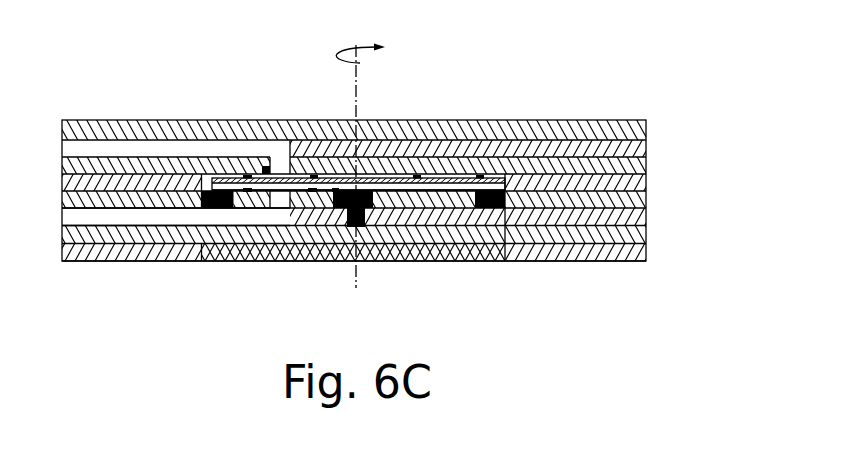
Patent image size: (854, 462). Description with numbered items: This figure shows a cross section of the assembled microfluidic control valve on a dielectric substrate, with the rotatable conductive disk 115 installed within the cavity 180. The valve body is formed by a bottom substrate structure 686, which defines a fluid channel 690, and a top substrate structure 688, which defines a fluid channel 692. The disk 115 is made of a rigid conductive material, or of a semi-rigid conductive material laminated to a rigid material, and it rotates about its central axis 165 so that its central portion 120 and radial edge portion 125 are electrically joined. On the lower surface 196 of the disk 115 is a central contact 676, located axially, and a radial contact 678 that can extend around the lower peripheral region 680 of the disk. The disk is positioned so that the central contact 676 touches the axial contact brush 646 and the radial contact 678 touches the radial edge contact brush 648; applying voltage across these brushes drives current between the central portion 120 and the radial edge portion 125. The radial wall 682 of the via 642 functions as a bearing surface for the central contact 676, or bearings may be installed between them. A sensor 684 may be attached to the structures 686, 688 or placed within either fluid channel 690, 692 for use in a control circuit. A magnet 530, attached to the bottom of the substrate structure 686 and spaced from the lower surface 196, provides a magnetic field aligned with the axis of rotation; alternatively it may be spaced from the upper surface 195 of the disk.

The top substrate structure 688 is at (672, 145).
The bottom substrate structure 686 is at (672, 235).
The fluid channel 692 is at (138, 147).
The sensor 684 is at (264, 166).
The via 642 is at (314, 175).
The central portion 120 is at (350, 190).
The central axis 165 is at (360, 83).
The upper surface 195 is at (364, 191).
The radial wall 682 is at (371, 191).
The rotatable conductive disk 115 is at (441, 184).
The radial edge portion 125 is at (488, 191).
The cavity 180 is at (501, 187).
The lower peripheral region 680 is at (512, 189).
The radial contact 678 is at (517, 191).
The radial edge contact brush 648 is at (509, 209).
The lower surface 196 is at (417, 191).
The axial contact brush 646 is at (365, 228).
The magnet 530 is at (301, 250).
The central contact 676 is at (333, 193).
The fluid channel 690 is at (139, 222).